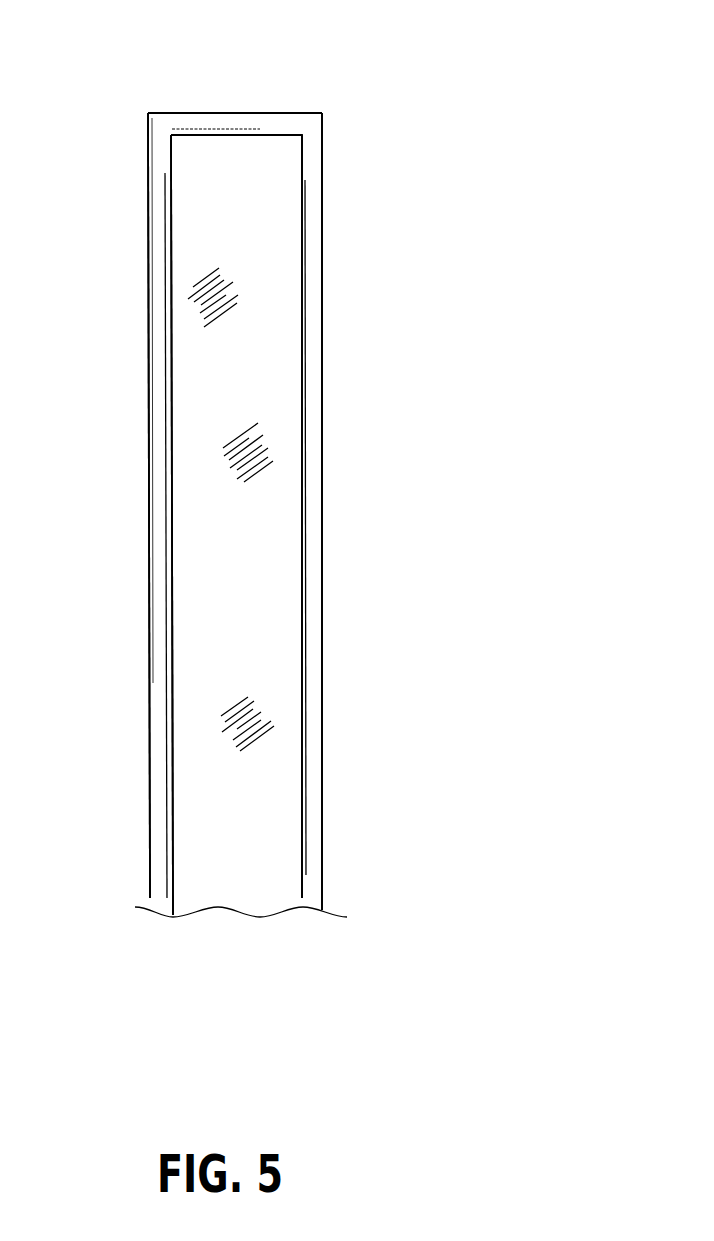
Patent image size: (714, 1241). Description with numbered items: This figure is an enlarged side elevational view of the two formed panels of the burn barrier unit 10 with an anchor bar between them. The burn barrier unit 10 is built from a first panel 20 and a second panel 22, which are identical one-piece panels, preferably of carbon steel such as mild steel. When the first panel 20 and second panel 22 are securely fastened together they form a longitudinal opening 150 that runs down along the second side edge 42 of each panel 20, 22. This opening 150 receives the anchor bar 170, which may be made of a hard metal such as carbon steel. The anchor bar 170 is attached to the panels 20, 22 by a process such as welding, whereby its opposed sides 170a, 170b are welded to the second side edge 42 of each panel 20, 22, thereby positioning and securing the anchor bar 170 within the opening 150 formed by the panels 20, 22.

The burn barrier unit 10 is at (172, 92).
The first panel 20 is at (332, 630).
The second panel 22 is at (142, 636).
The second side edge 42 is at (162, 429).
The longitudinal opening 150 is at (170, 258).
The anchor bar 170 is at (250, 503).
The opposed side of anchor bar 170a is at (302, 823).
The opposed side of anchor bar 170b is at (173, 827).